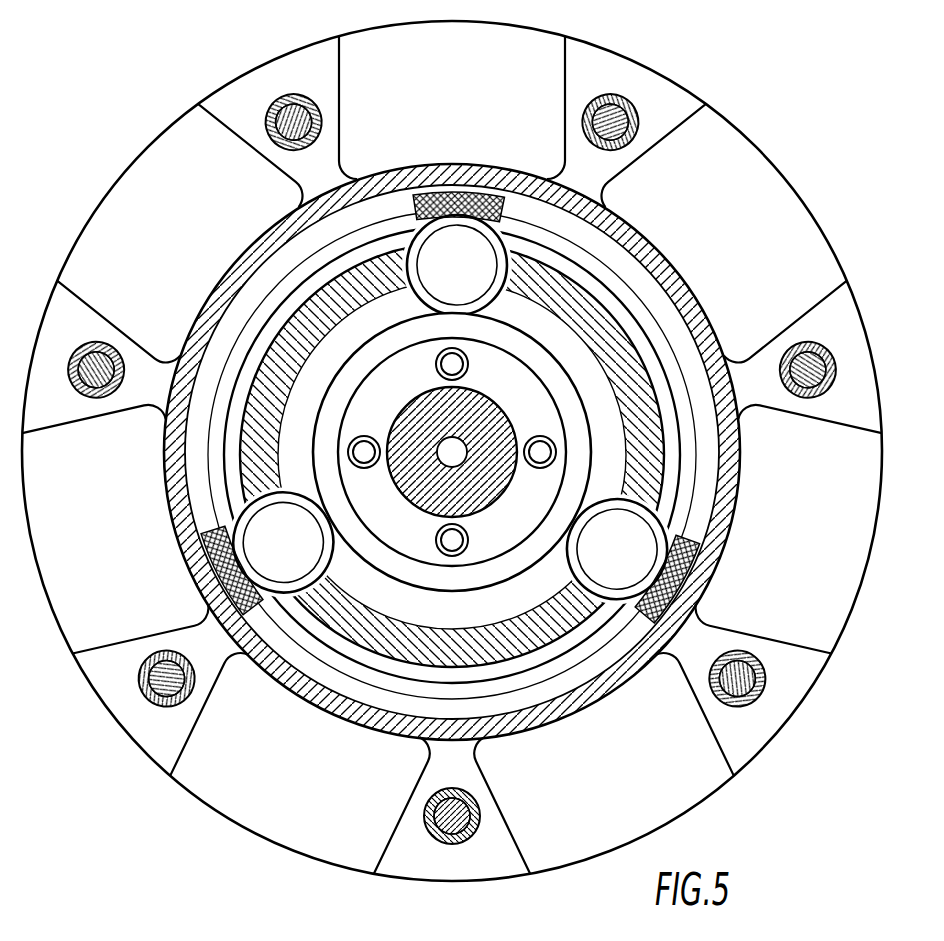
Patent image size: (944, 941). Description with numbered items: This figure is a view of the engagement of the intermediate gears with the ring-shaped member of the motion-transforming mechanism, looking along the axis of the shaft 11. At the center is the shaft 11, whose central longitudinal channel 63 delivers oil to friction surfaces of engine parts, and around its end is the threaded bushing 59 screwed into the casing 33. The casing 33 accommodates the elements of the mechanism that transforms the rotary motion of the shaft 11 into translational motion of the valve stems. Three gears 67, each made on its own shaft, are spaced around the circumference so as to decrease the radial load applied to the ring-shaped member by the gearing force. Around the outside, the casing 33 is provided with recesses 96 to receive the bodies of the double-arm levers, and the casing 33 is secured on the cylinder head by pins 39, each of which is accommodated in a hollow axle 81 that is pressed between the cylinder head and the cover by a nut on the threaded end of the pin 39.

The shaft 11 is at (478, 410).
The casing 33 is at (328, 312).
The pin 39 is at (296, 97).
The threaded bushing 59 is at (545, 388).
The central longitudinal channel 63 is at (458, 460).
The gear 67 is at (483, 290).
The axle 81 is at (305, 146).
The recess 96 is at (790, 222).